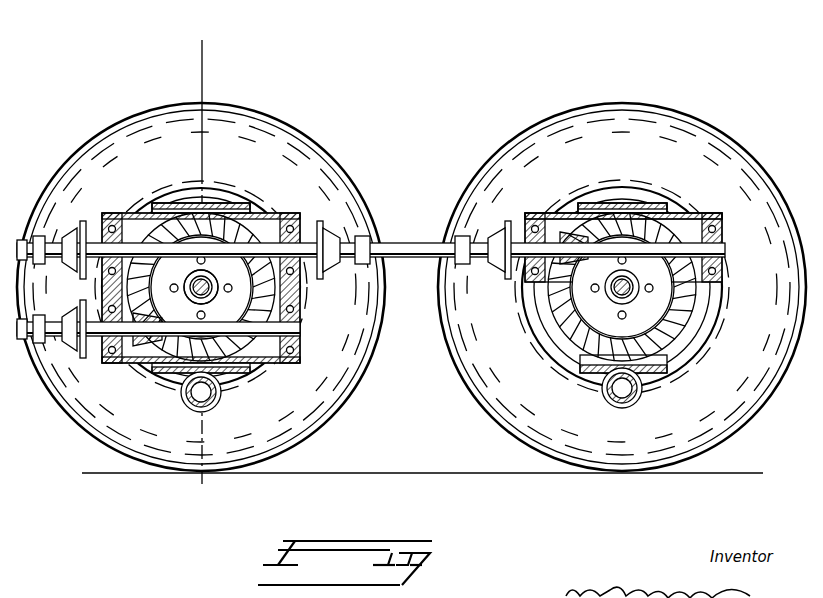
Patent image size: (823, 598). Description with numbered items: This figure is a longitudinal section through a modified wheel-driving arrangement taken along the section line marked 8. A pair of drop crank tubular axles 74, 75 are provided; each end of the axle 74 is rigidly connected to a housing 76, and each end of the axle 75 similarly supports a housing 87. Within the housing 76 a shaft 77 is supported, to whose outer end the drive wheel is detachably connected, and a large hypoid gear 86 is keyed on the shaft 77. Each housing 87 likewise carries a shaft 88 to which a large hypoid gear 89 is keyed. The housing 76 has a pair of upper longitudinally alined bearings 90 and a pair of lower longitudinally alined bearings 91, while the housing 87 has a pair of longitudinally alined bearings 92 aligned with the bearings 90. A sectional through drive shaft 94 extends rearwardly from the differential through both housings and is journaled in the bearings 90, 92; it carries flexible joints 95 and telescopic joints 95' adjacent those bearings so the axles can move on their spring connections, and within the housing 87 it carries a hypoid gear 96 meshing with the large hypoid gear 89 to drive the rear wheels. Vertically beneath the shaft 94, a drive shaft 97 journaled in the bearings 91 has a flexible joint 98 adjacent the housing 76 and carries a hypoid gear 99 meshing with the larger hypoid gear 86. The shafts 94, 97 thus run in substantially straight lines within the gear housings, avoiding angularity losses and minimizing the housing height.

The section line 8- 8 is at (188, 269).
The drop crank tubular axle 74 is at (222, 396).
The drop crank tubular axle 75 is at (644, 392).
The housing 76 is at (233, 210).
The shaft 77 is at (216, 281).
The hypoid gear 86 is at (268, 213).
The housing 87 is at (660, 213).
The shaft 88 is at (650, 290).
The hypoid gear 89 is at (692, 218).
The upper longitudinally alined bearings 90 is at (124, 213).
The lower longitudinally alined bearings 91 is at (112, 364).
The longitudinally alined bearings 92 is at (534, 213).
The sectional through drive shaft 94 is at (405, 244).
The flexible joints 95 is at (264, 237).
The telescopic joints 95' is at (262, 251).
The hypoid gear 96 is at (590, 212).
The drive shaft 97 is at (58, 345).
The flexible joint 98 is at (74, 308).
The hypoid gear 99 is at (190, 288).